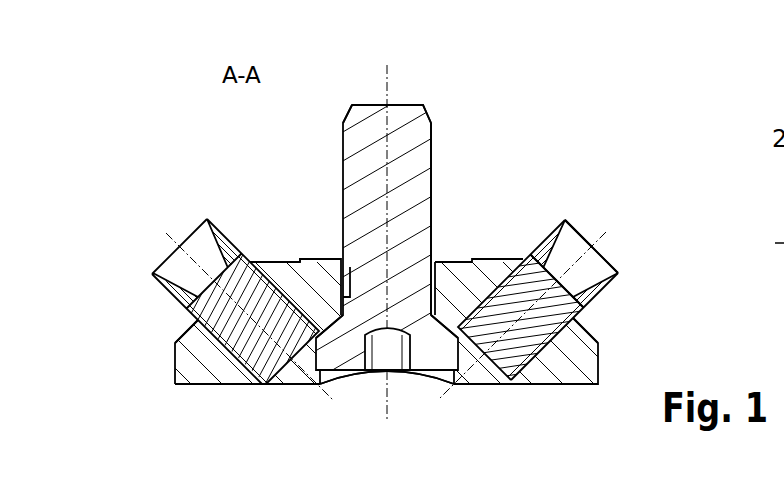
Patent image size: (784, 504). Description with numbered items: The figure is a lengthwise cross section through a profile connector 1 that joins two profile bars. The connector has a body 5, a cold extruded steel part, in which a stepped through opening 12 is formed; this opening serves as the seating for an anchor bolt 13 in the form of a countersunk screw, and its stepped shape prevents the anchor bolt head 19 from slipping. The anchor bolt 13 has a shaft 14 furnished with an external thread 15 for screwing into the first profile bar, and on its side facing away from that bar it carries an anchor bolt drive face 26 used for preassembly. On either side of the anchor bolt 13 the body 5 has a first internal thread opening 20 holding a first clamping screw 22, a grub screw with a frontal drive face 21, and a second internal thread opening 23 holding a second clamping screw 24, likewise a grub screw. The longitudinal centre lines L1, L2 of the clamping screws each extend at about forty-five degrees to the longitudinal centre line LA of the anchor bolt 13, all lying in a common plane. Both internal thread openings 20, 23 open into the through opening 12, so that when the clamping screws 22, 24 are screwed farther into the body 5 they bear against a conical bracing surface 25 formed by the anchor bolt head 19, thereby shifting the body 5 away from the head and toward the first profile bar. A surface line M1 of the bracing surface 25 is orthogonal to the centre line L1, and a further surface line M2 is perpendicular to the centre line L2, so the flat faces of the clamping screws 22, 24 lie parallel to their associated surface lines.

The profile connector 1 is at (568, 214).
The body 5 is at (547, 377).
The through opening 12 is at (337, 383).
The anchor bolt 13 is at (415, 187).
The shaft 14 is at (413, 135).
The external thread 15 is at (432, 153).
The anchor bolt head 19 is at (431, 378).
The first internal thread opening 20 is at (593, 332).
The frontal drive face 21 is at (598, 260).
The first clamping screw 22 is at (620, 277).
The second internal thread opening 23 is at (228, 384).
The second clamping screw 24 is at (251, 262).
The bracing surface 25 is at (278, 262).
The anchor bolt drive face 26 is at (383, 372).
The longitudinal centre line of first clamping screw L1 is at (583, 223).
The longitudinal centre line of second clamping screw L2 is at (176, 240).
The longitudinal centre line of anchor bolt LA is at (405, 105).
The surface line of bracing surface M1 is at (460, 302).
The further surface line of bracing surface M2 is at (340, 320).